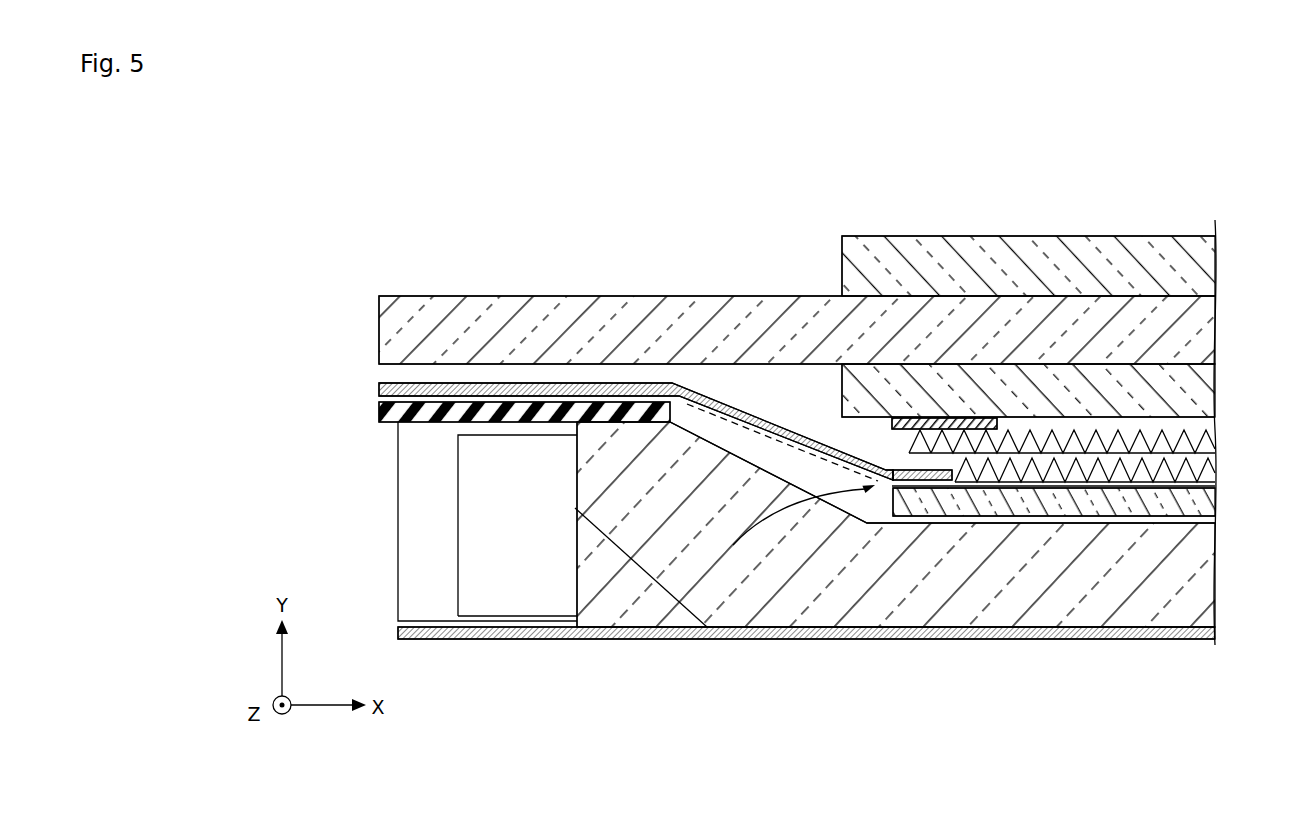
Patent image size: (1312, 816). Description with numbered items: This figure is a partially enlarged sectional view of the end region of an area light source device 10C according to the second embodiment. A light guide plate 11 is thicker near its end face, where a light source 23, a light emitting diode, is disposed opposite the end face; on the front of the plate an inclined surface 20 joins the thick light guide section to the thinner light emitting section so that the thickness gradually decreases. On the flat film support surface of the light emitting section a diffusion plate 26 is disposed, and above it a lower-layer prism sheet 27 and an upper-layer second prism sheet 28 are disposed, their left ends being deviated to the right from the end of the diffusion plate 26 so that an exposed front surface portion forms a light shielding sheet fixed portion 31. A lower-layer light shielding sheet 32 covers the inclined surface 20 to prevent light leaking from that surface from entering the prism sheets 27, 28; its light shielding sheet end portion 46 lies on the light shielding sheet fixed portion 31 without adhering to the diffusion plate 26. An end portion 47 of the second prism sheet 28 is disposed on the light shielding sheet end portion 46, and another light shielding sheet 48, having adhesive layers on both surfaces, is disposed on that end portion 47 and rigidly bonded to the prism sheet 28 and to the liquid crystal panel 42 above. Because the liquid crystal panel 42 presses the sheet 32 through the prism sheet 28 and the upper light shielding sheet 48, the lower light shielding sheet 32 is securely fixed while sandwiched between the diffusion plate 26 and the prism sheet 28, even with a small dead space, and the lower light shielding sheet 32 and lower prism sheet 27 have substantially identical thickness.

The area light source device 10C is at (403, 262).
The light guide plate 11 is at (1132, 592).
The inclined surface 20 is at (748, 462).
The light source 23 is at (515, 593).
The diffusion plate 26 is at (1190, 498).
The prism sheet 27 is at (1190, 463).
The second prism sheet 28 is at (1190, 435).
The light shielding sheet fixed portion 31 is at (930, 487).
The light shielding sheet 32 is at (735, 395).
The liquid crystal panel 42 is at (1200, 262).
The light shielding sheet end portion 46 is at (900, 488).
The end portion of the second prism sheet 47 is at (910, 443).
The light shielding sheet 48 is at (933, 425).